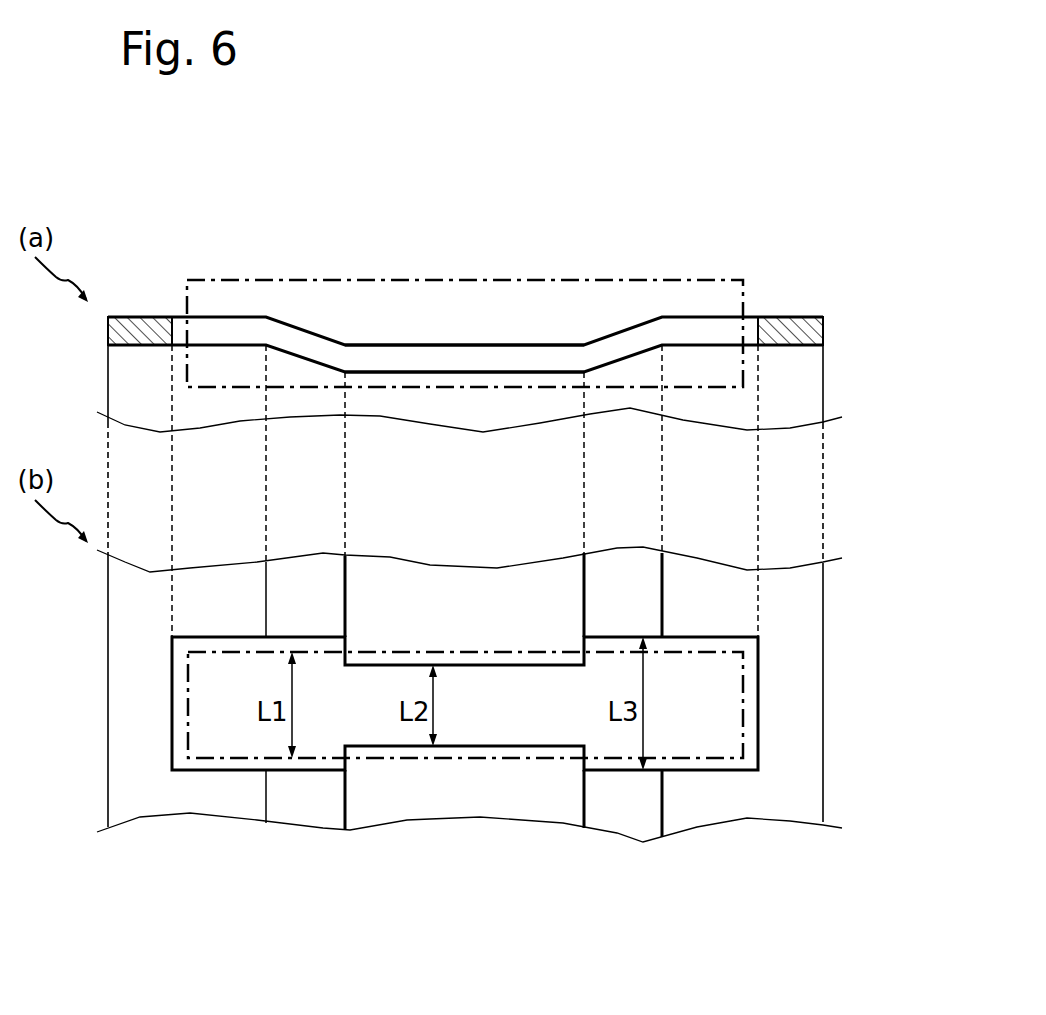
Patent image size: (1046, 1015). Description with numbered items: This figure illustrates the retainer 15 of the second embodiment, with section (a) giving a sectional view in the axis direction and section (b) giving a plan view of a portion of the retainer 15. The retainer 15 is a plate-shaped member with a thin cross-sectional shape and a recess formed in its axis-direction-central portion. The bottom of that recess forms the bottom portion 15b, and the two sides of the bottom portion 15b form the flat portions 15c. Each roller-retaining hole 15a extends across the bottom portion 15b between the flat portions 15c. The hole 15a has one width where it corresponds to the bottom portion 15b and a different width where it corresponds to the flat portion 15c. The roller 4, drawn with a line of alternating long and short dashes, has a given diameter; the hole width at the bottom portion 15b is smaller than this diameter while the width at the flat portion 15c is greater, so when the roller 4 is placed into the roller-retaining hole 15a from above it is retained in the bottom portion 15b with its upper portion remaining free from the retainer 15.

The retainer 15 is at (840, 375).
The roller-retaining hole 15a is at (747, 330).
The bottom portion 15b is at (475, 360).
The flat portion 15c is at (221, 335).
The roller 4 is at (398, 652).